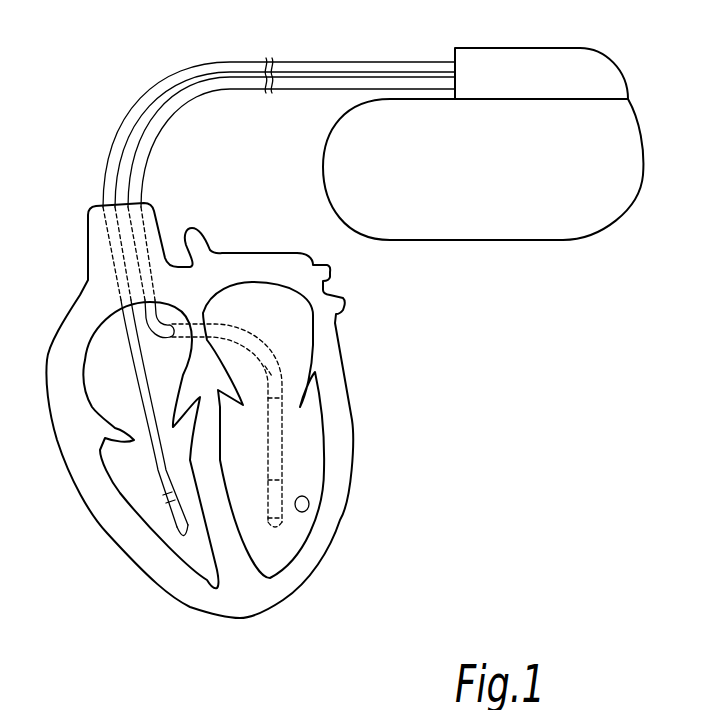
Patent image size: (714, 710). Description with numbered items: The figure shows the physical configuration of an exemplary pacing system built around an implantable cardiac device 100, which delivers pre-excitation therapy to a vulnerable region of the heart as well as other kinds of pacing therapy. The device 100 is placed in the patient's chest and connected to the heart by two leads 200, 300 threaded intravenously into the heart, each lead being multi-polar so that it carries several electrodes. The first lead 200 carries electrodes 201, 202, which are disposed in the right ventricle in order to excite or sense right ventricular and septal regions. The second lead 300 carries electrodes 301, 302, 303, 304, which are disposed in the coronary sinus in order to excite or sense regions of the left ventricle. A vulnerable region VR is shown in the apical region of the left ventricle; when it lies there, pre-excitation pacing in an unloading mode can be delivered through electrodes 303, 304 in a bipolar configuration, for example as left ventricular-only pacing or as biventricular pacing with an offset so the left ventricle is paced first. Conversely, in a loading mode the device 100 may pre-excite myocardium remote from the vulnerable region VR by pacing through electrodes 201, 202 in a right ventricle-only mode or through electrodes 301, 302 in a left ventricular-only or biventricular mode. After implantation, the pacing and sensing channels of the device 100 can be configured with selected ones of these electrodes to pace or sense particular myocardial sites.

The implantable cardiac device 100 is at (607, 68).
The lead 200 is at (247, 319).
The electrode 201 is at (163, 498).
The electrode 202 is at (184, 541).
The lead 300 is at (291, 339).
The electrode 301 is at (273, 372).
The electrode 302 is at (283, 402).
The electrode 303 is at (285, 482).
The electrode 304 is at (278, 530).
The vulnerable region VR is at (306, 511).